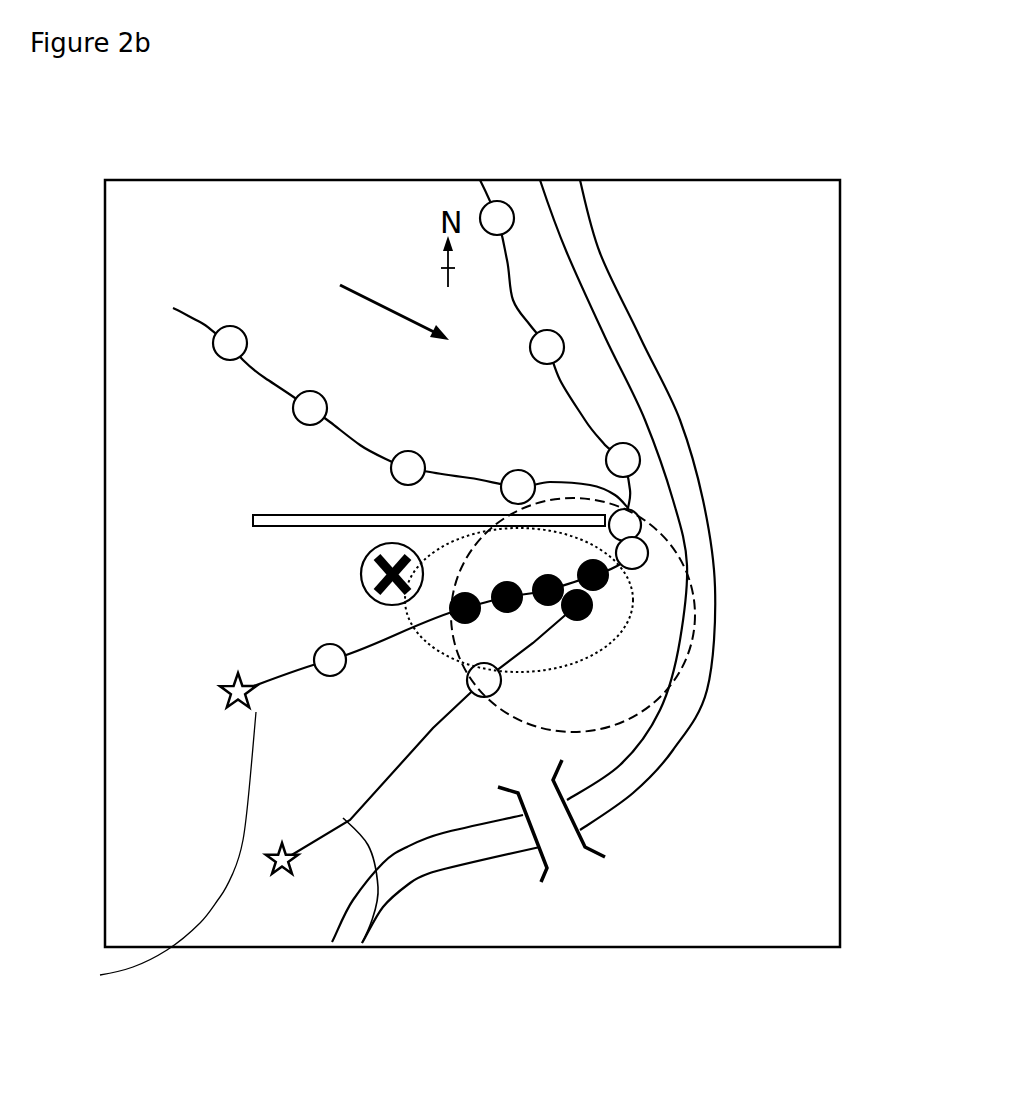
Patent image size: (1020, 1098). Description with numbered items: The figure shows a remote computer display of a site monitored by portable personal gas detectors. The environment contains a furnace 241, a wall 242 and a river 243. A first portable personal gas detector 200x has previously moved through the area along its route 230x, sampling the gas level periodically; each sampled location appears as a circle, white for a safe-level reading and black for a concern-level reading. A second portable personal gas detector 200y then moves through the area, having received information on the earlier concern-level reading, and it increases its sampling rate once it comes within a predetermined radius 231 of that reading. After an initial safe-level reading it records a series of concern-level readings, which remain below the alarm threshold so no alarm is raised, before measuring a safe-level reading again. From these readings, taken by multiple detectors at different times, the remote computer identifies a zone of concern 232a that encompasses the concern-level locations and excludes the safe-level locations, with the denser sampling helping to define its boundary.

The wall 242 is at (253, 520).
The furnace 241 is at (362, 572).
The portable personal gas detector 200y is at (229, 712).
The route 230x is at (352, 905).
The portable personal gas detector 200x is at (278, 872).
The river 243 is at (442, 863).
The predetermined radius 231 is at (575, 733).
The zone of concern 232a is at (593, 655).